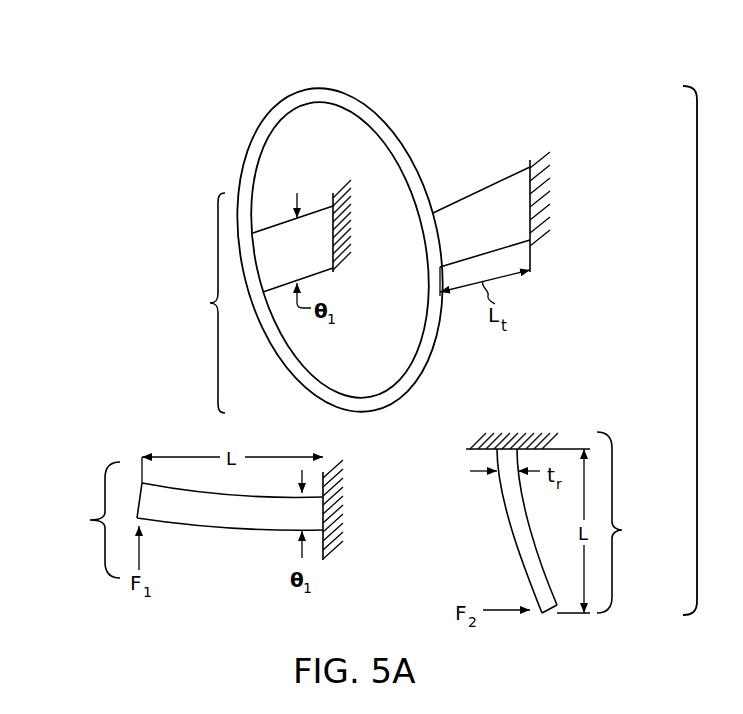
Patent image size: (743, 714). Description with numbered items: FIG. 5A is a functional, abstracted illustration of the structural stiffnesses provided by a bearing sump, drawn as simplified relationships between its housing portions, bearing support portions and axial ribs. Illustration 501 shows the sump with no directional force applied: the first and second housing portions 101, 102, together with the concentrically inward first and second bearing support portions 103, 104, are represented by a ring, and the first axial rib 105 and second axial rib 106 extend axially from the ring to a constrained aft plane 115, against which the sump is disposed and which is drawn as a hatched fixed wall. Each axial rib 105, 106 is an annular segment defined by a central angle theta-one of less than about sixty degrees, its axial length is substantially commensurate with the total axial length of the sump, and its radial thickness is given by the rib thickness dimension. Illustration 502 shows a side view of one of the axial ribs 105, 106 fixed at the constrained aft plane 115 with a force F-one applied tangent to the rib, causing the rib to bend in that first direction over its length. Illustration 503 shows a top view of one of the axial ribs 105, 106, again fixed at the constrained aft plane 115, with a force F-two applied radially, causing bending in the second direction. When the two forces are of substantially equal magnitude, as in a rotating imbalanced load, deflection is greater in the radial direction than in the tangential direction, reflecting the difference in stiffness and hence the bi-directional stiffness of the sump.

The first housing portion 101 is at (340, 235).
The first bearing support portion 103 is at (316, 87).
The second housing portion 102 is at (380, 250).
The second bearing support portion 104 is at (428, 352).
The first axial rib 105 is at (313, 207).
The second axial rib 106 is at (478, 190).
The constrained aft plane 115 is at (360, 170).
The illustration 501 is at (210, 303).
The illustration 502 is at (90, 520).
The illustration 503 is at (622, 530).